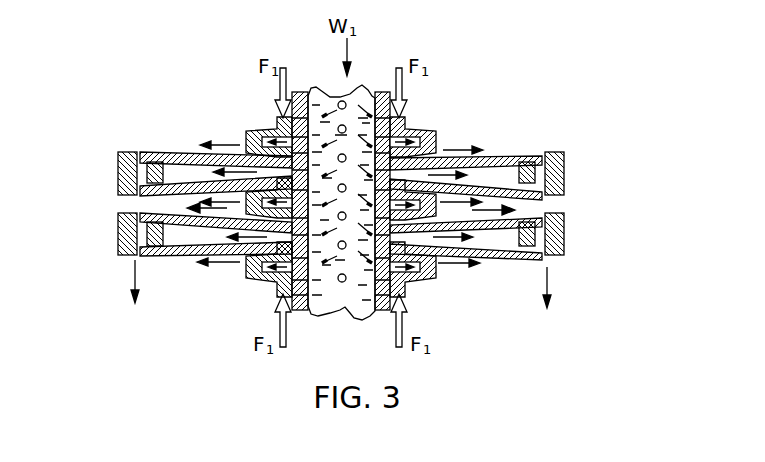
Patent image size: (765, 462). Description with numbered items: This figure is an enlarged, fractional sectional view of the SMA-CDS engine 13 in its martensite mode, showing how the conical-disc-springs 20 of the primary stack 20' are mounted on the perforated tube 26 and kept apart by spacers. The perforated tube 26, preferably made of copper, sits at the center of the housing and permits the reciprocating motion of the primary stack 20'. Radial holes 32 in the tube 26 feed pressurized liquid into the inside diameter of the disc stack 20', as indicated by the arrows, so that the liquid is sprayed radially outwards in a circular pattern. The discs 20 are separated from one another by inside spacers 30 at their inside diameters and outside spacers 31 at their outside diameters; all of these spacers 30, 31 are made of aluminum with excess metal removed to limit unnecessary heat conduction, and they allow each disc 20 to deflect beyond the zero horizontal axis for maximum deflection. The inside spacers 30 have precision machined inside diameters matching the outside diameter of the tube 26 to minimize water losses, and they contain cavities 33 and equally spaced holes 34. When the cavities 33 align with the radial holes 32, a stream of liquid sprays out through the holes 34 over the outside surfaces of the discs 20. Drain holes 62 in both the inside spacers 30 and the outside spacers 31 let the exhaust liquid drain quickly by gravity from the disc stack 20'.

The SMA-CDS engine 13 is at (638, 148).
The conical-disc-springs 20 is at (377, 229).
The primary stack 20' is at (197, 154).
The perforated tube 26 is at (357, 95).
The inside spacers 30 is at (436, 262).
The outside spacers 31 is at (563, 180).
The radial holes 32 is at (345, 281).
The cavities 33 is at (250, 133).
The holes 34 is at (422, 283).
The drain holes 62 is at (540, 238).